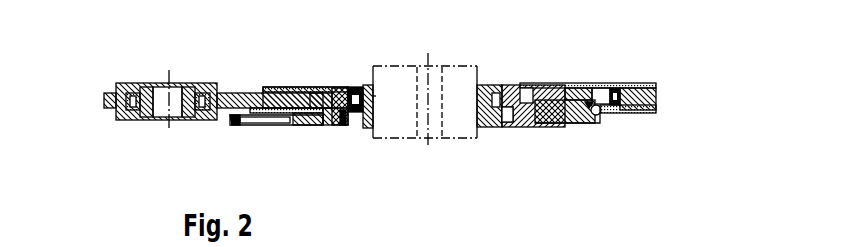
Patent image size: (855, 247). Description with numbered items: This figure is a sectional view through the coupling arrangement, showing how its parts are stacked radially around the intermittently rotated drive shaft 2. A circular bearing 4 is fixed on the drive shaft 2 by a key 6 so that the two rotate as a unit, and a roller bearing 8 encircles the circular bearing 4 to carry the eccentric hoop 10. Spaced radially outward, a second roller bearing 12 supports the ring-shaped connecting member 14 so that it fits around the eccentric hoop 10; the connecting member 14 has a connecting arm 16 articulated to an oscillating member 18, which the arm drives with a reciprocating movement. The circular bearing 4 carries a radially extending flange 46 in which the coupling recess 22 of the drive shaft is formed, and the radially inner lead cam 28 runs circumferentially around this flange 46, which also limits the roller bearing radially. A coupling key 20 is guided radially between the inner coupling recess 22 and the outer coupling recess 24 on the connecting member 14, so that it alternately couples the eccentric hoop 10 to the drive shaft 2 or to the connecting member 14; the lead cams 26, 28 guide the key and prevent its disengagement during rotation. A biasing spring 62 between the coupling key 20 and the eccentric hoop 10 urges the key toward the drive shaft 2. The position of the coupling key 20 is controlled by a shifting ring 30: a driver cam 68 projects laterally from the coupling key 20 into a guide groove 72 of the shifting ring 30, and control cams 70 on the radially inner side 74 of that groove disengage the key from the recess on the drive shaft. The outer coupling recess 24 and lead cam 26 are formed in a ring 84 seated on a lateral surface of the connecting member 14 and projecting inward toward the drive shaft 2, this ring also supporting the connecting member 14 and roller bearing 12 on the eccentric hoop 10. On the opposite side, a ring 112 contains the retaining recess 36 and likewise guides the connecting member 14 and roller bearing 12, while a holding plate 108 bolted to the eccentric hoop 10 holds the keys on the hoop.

The drive shaft 2 is at (400, 77).
The circular bearing 4 is at (375, 96).
The key 6 is at (437, 77).
The roller bearing 8 is at (357, 88).
The eccentric hoop 10 is at (338, 90).
The roller bearing 12 is at (318, 96).
The connecting member 14 is at (270, 87).
The connecting arm 16 is at (232, 93).
The oscillating member 18 is at (133, 84).
The coupling key 20 is at (540, 84).
The coupling recess 22 is at (508, 113).
The coupling recess 24 is at (627, 118).
The lead cam 26 is at (605, 90).
The lead cam 28 is at (350, 123).
The shifting ring 30 is at (229, 122).
The retaining recess 36 is at (615, 88).
The radially extending flange 46 is at (365, 128).
The biasing spring 62 is at (570, 90).
The driver cam 68 is at (598, 116).
The control cams 70 is at (585, 107).
The guide groove 72 is at (250, 113).
The radially inner side 74 is at (282, 126).
The ring 84 is at (308, 125).
The holding plate 108 is at (557, 103).
The ring 112 is at (295, 87).